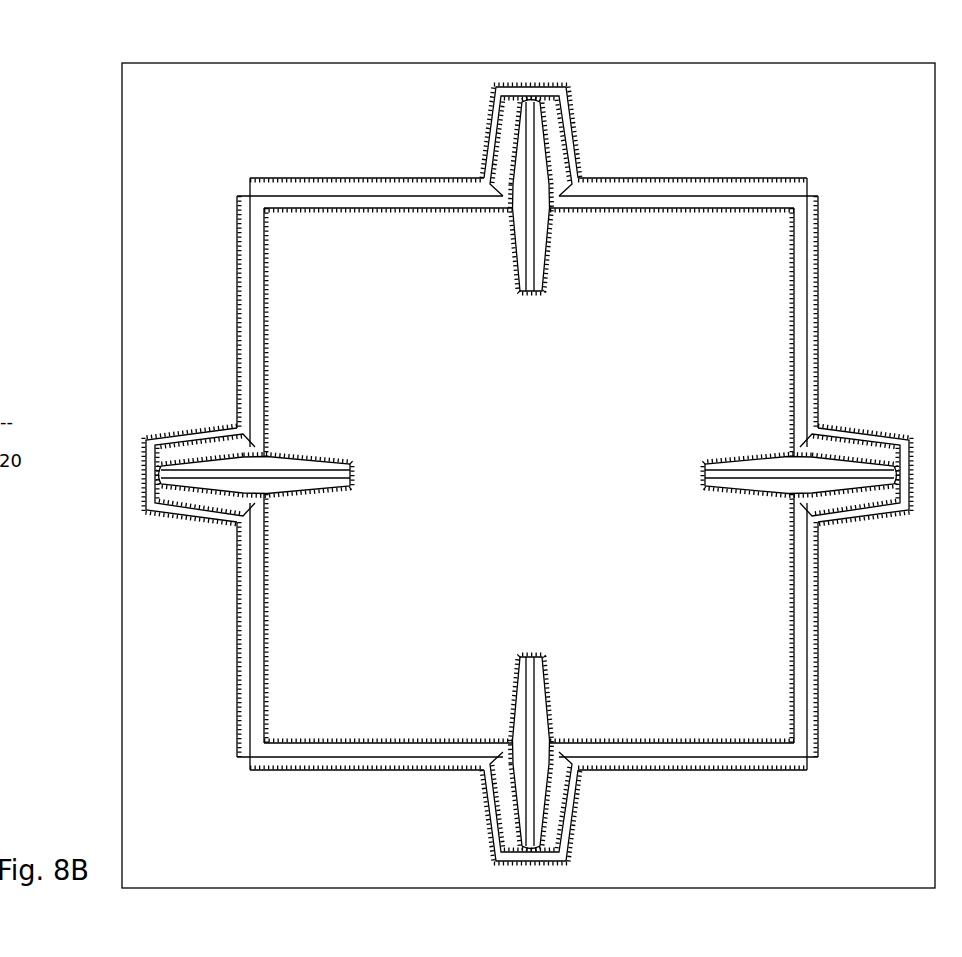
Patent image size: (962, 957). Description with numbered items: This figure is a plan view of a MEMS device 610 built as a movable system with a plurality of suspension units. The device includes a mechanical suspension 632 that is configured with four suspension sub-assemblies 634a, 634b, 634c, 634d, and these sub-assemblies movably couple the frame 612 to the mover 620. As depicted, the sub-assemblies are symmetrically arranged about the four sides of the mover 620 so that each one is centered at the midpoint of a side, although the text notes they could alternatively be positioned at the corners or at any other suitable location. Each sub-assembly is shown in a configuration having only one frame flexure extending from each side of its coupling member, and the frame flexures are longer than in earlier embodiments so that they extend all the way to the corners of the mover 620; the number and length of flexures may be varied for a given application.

The MEMS device 610 is at (93, 118).
The frame 612 is at (122, 592).
The mechanical suspension 632 is at (236, 146).
The mover 620 is at (262, 676).
The suspension sub-assembly 634a is at (190, 408).
The suspension sub-assembly 634b is at (466, 148).
The suspension sub-assembly 634c is at (930, 366).
The suspension sub-assembly 634d is at (453, 816).